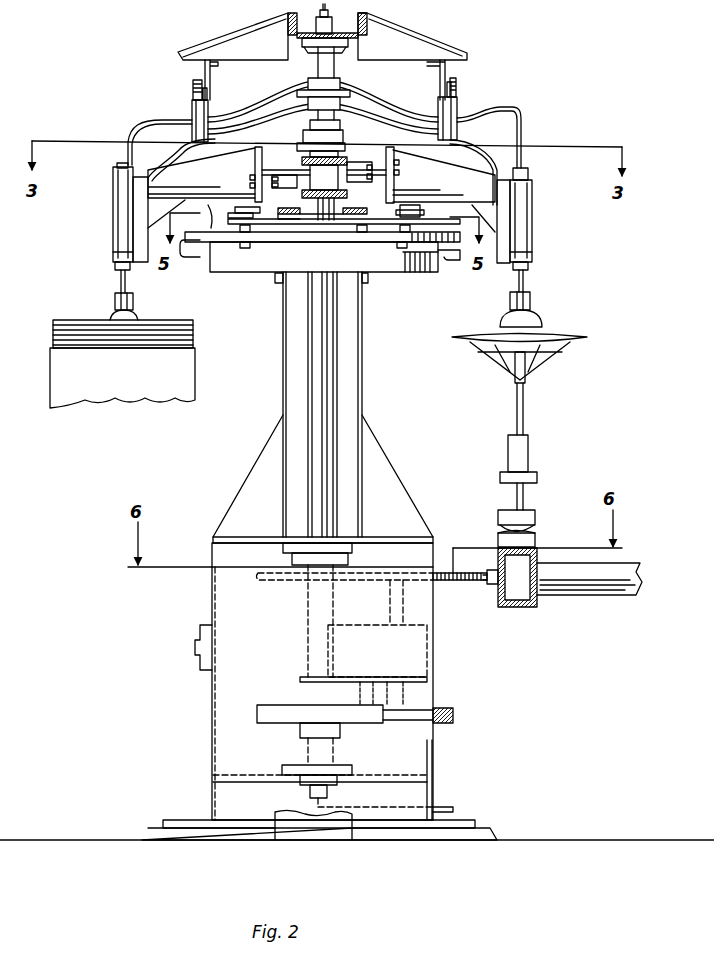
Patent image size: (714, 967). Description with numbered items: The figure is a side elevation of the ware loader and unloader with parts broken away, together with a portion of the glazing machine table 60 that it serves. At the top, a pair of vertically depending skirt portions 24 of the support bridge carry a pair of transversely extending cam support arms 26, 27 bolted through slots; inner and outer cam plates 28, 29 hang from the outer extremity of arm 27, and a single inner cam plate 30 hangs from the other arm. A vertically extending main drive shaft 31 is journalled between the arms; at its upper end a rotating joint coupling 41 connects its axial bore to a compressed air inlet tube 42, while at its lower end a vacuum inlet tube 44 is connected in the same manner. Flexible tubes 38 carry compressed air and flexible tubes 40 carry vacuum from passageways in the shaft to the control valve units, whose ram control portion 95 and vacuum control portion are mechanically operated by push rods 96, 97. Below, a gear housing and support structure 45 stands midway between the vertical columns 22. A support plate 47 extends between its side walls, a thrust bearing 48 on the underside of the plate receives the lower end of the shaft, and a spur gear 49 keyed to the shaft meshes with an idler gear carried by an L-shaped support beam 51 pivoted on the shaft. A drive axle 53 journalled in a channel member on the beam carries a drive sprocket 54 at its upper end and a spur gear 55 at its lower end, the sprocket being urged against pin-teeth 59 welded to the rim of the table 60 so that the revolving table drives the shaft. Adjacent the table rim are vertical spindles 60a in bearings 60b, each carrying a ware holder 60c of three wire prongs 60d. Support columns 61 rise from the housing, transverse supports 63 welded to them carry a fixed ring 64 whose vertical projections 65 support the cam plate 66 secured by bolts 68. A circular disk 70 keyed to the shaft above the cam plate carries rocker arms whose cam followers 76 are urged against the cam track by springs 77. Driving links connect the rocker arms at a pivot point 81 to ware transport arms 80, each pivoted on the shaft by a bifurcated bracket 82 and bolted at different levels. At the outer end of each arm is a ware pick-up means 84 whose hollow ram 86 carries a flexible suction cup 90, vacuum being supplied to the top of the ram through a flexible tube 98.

The vertical columns 22 is at (303, 836).
The skirt portions 24 is at (300, 60).
The cam support arm 26 is at (219, 40).
The cam support arm 27 is at (388, 35).
The inner cam plate 28 is at (440, 86).
The outer cam plate 29 is at (458, 85).
The inner cam plate 30 is at (211, 84).
The main drive shaft 31 is at (325, 331).
The flexible tube 38 is at (263, 92).
The flexible tube 40 is at (341, 98).
The rotating joint coupling 41 is at (337, 19).
The compressed air inlet tube 42 is at (290, 9).
The vacuum inlet tube 44 is at (437, 807).
The gear housing and support structure 45 is at (212, 553).
The support plate 47 is at (418, 774).
The thrust bearing 48 is at (295, 790).
The spur gear 49 is at (265, 705).
The L-shaped support beam 51 is at (383, 623).
The drive axle 53 is at (390, 598).
The drive sprocket 54 is at (465, 582).
The spur gear 55 is at (455, 716).
The pin-teeth 59 is at (488, 573).
The glazing machine table 60 is at (517, 607).
The vertical spindle 60a is at (524, 413).
The bearings 60b is at (536, 518).
The ware holder 60c is at (527, 378).
The wire prongs 60d is at (515, 355).
The support columns 61 is at (282, 379).
The transverse supports 63 is at (278, 283).
The fixed ring 64 is at (211, 263).
The vertical projections 65 is at (458, 252).
The cam plate 66 is at (210, 225).
The bolts 68 is at (450, 232).
The circular disk 70 is at (411, 224).
The cam follower 76 is at (245, 249).
The spring 77 is at (348, 208).
The ware transport arm 80 is at (212, 160).
The pivot point 81 is at (240, 216).
The bifurcated bracket 82 is at (291, 165).
The ware pick-up means 84 is at (111, 240).
The hollow ram 86 is at (118, 286).
The suction cup 90 is at (140, 318).
The ram control portion 95 is at (192, 99).
The push rod 96 is at (208, 103).
The push rod 97 is at (140, 118).
The flexible tube 98 is at (165, 152).